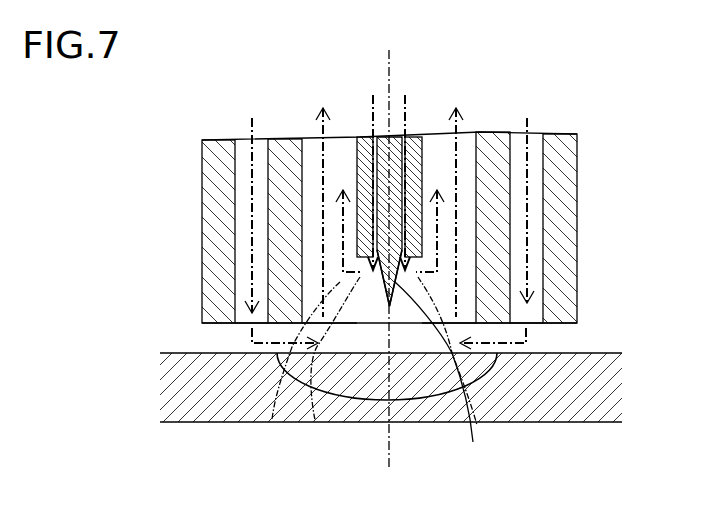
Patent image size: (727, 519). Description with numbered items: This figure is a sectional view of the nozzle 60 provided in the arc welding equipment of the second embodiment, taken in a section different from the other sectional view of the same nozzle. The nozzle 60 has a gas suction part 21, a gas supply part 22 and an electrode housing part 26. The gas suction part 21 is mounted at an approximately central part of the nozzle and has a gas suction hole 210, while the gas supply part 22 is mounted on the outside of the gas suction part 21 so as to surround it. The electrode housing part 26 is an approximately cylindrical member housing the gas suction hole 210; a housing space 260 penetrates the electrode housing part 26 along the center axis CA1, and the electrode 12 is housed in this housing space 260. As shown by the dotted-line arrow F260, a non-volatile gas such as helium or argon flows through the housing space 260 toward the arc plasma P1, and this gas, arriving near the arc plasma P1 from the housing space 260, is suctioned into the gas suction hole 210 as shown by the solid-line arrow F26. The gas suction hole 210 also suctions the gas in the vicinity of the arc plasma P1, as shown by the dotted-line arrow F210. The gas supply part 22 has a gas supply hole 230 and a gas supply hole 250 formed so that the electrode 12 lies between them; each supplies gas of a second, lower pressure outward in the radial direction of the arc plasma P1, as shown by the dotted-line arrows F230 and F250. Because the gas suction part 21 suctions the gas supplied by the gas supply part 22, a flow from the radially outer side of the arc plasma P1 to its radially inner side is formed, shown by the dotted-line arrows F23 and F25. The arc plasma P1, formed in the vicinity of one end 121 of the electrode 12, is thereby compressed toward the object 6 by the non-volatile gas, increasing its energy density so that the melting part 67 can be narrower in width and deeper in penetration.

The electrode 12 is at (392, 150).
The nozzle 60 is at (584, 131).
The electrode housing part 26 is at (422, 178).
The housing space 260 is at (373, 168).
The non-volatile gas flow in housing space F260 is at (373, 97).
The gas suction hole 210 is at (422, 255).
The gas suction flow F210 is at (322, 125).
The gas suction part 21 is at (477, 283).
The gas supply part 22 is at (552, 307).
The gas supply hole 250 is at (244, 215).
The gas supply flow F250 is at (251, 183).
The gas supply hole 230 is at (530, 211).
The gas supply flow F230 is at (527, 187).
The object 6 is at (592, 381).
The melting part 67 is at (380, 397).
The one end of the electrode 121 is at (385, 287).
The arc plasma P1 is at (315, 420).
The suctioned non-volatile gas flow F26 is at (272, 420).
The radially inward gas flow F25 is at (270, 343).
The radially inward gas flow F23 is at (507, 345).
The center axis CA1 is at (389, 467).